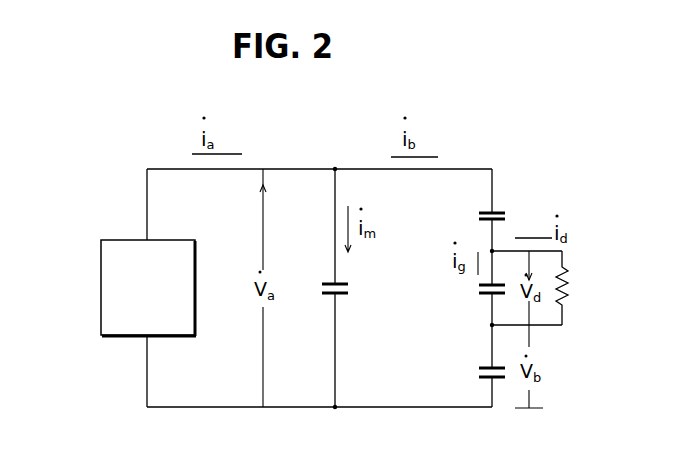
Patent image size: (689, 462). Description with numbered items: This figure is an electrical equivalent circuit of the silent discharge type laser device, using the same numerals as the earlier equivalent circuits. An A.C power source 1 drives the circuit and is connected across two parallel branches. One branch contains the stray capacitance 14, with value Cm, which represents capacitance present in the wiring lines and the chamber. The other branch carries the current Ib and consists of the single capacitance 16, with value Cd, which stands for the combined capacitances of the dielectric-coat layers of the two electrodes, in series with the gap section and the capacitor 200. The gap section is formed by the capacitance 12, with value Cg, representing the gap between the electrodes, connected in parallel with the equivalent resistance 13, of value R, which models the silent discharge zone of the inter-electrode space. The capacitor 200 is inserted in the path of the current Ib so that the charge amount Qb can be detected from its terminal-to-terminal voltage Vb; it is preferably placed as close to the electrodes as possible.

The A.C power source 1 is at (113, 240).
The capacitance of gap between electrodes 12 is at (477, 290).
The equivalent resistance of silent discharge zone 13 is at (573, 292).
The stray capacitance 14 is at (349, 287).
The single capacitance 16 is at (506, 213).
The capacitor 200 is at (477, 373).